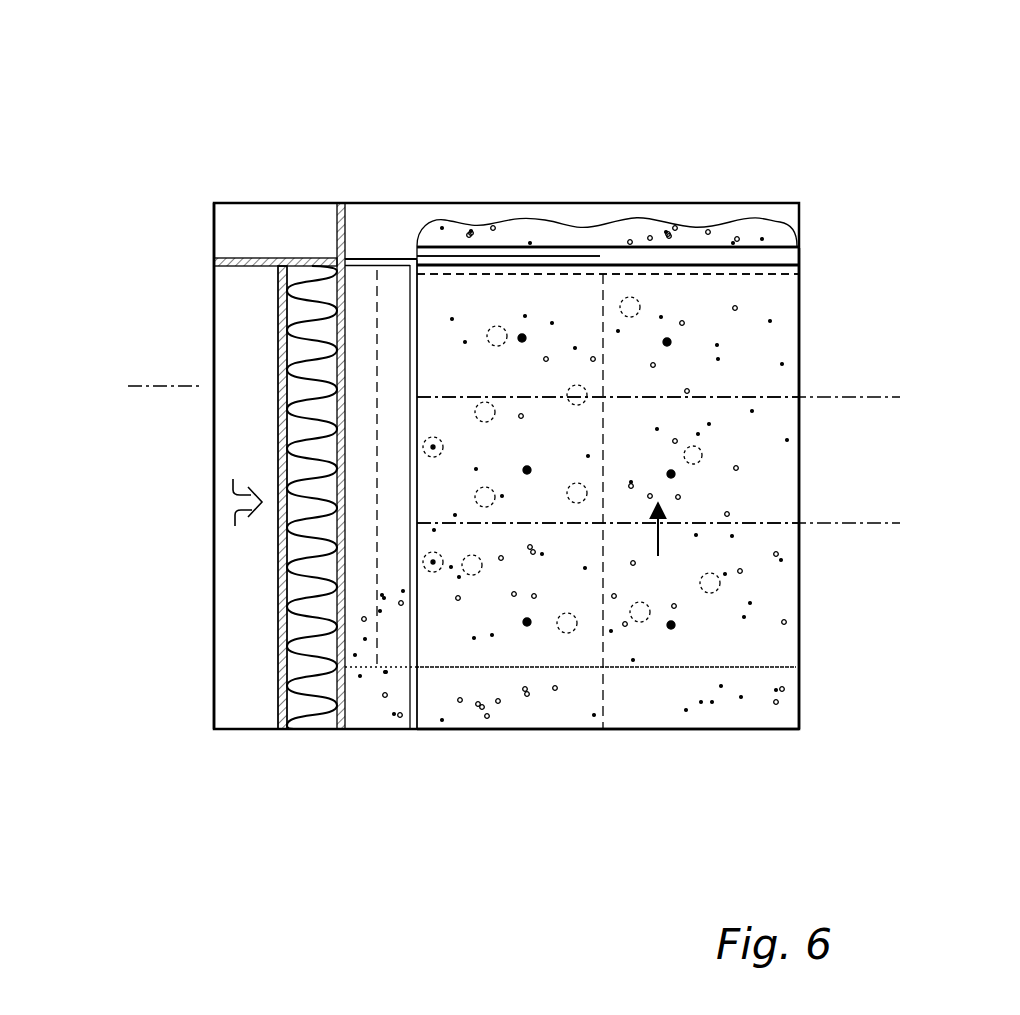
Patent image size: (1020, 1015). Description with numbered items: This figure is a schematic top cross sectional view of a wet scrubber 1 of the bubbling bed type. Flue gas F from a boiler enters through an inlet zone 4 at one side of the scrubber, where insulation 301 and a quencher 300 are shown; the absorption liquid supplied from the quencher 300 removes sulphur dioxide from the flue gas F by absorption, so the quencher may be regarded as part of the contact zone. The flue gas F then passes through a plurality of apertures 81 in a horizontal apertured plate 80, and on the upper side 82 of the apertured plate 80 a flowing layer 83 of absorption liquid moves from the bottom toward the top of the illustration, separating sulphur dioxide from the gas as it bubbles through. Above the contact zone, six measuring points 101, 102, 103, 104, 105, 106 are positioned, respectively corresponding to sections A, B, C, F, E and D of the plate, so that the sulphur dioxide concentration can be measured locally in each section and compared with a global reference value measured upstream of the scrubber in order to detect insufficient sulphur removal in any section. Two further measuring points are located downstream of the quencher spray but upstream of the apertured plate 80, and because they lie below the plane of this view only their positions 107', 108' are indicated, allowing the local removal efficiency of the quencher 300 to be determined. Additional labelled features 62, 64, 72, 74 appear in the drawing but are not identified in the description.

The wet scrubber 1 is at (458, 121).
The inlet zone 4 is at (225, 330).
The bottom wall 62 is at (512, 737).
The side wall 64 is at (797, 693).
The lower boundary 72 is at (796, 670).
The upper layer 74 is at (758, 263).
The apertured plate 80 is at (778, 577).
The apertures 81 is at (592, 393).
The upper side 82 is at (495, 257).
The flowing layer 83 is at (758, 315).
The measuring point 101 is at (667, 342).
The measuring point 102 is at (671, 474).
The measuring point 103 is at (671, 628).
The measuring point 104 is at (527, 626).
The measuring point 105 is at (527, 470).
The measuring point 106 is at (522, 338).
The indicated position of measuring point 107' is at (235, 584).
The indicated position of measuring point 108' is at (236, 469).
The quencher 300 is at (420, 395).
The insulation 301 is at (300, 728).